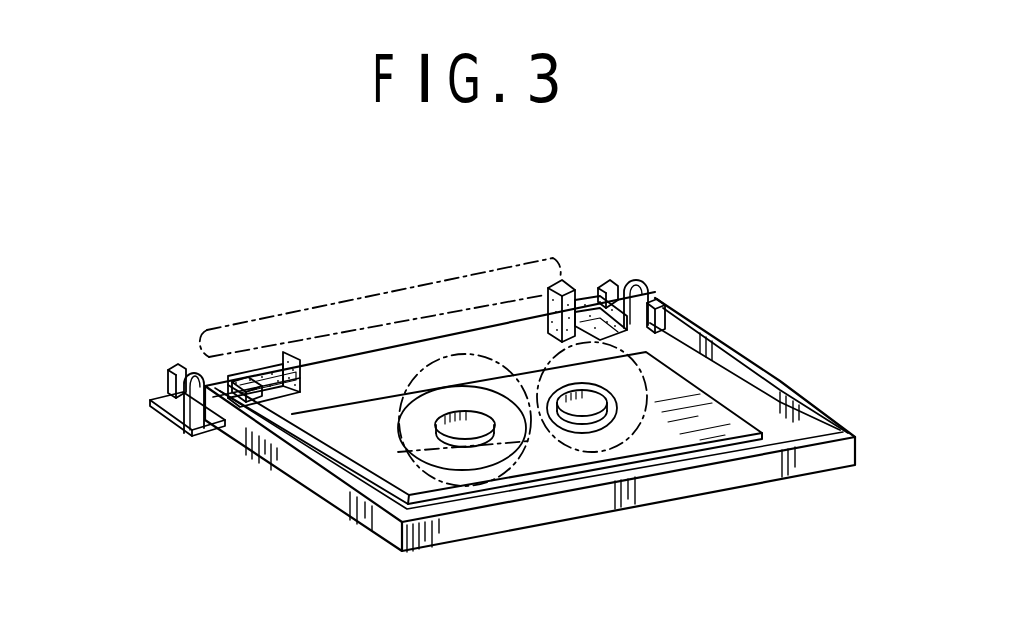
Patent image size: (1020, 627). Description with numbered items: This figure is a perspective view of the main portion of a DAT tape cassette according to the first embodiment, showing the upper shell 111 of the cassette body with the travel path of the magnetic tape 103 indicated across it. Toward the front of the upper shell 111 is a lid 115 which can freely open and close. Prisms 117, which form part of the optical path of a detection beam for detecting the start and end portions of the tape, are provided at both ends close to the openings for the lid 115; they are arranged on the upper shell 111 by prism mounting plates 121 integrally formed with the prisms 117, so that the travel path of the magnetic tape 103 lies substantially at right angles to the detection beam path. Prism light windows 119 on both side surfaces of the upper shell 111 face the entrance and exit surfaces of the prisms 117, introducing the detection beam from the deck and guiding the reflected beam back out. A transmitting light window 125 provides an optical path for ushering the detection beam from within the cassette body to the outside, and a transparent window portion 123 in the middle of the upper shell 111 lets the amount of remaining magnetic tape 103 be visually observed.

The magnetic tape 103 is at (435, 300).
The upper shell 111 is at (556, 512).
The lid 115 is at (158, 424).
The prism 117 is at (298, 360).
The prism light window 119 is at (195, 372).
The prism mounting plate 121 is at (255, 380).
The transparent window portion 123 is at (665, 455).
The transmitting light window 125 is at (183, 368).